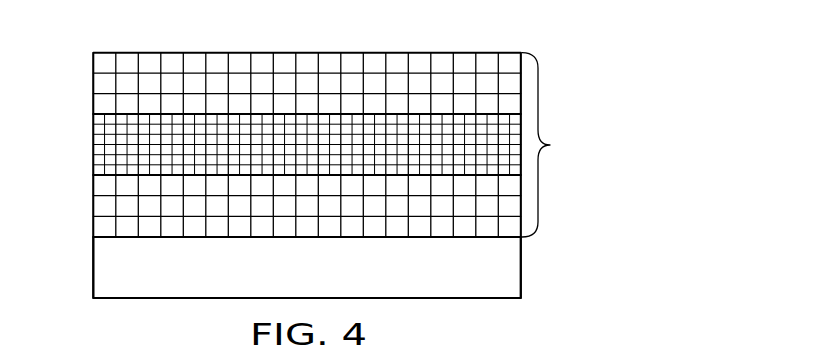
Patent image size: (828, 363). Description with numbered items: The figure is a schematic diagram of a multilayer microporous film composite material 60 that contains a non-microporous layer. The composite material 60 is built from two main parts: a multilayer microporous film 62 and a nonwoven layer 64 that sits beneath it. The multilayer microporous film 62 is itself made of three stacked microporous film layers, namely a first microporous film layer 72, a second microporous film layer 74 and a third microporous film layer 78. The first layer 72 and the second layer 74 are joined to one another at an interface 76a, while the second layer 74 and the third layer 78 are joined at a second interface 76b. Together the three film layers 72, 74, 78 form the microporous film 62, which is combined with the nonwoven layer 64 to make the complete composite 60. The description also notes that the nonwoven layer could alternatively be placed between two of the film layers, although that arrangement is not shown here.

The multilayer microporous film composite material 60 is at (591, 174).
The multilayer microporous film 62 is at (339, 145).
The nonwoven layer 64 is at (512, 270).
The first microporous film layer 72 is at (100, 87).
The second microporous film layer 74 is at (100, 150).
The interface 76a is at (122, 114).
The interface 76b is at (122, 176).
The third microporous film layer 78 is at (98, 210).